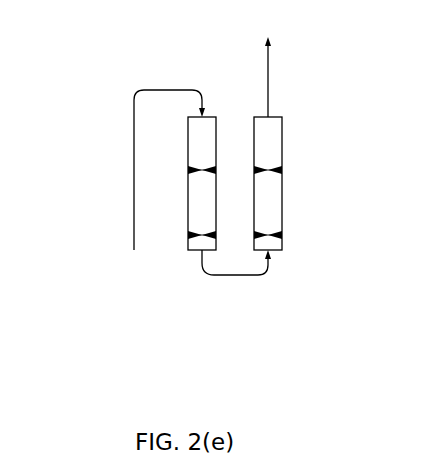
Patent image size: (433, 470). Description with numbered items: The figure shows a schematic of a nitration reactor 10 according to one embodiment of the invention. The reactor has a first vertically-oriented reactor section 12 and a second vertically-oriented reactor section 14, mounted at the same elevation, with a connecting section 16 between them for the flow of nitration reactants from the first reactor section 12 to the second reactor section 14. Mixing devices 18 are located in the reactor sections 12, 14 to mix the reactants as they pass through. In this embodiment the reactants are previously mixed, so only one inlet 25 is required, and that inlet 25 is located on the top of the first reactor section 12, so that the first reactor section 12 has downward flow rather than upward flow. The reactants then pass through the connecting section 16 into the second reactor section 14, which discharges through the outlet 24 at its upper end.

The nitration reactor 10 is at (188, 48).
The first vertically-oriented reactor section 12 is at (200, 197).
The second vertically-oriented reactor section 14 is at (275, 150).
The connecting section 16 is at (233, 276).
The mixing devices 18 is at (269, 230).
The outlet line 24 is at (268, 75).
The inlet 25 is at (134, 157).